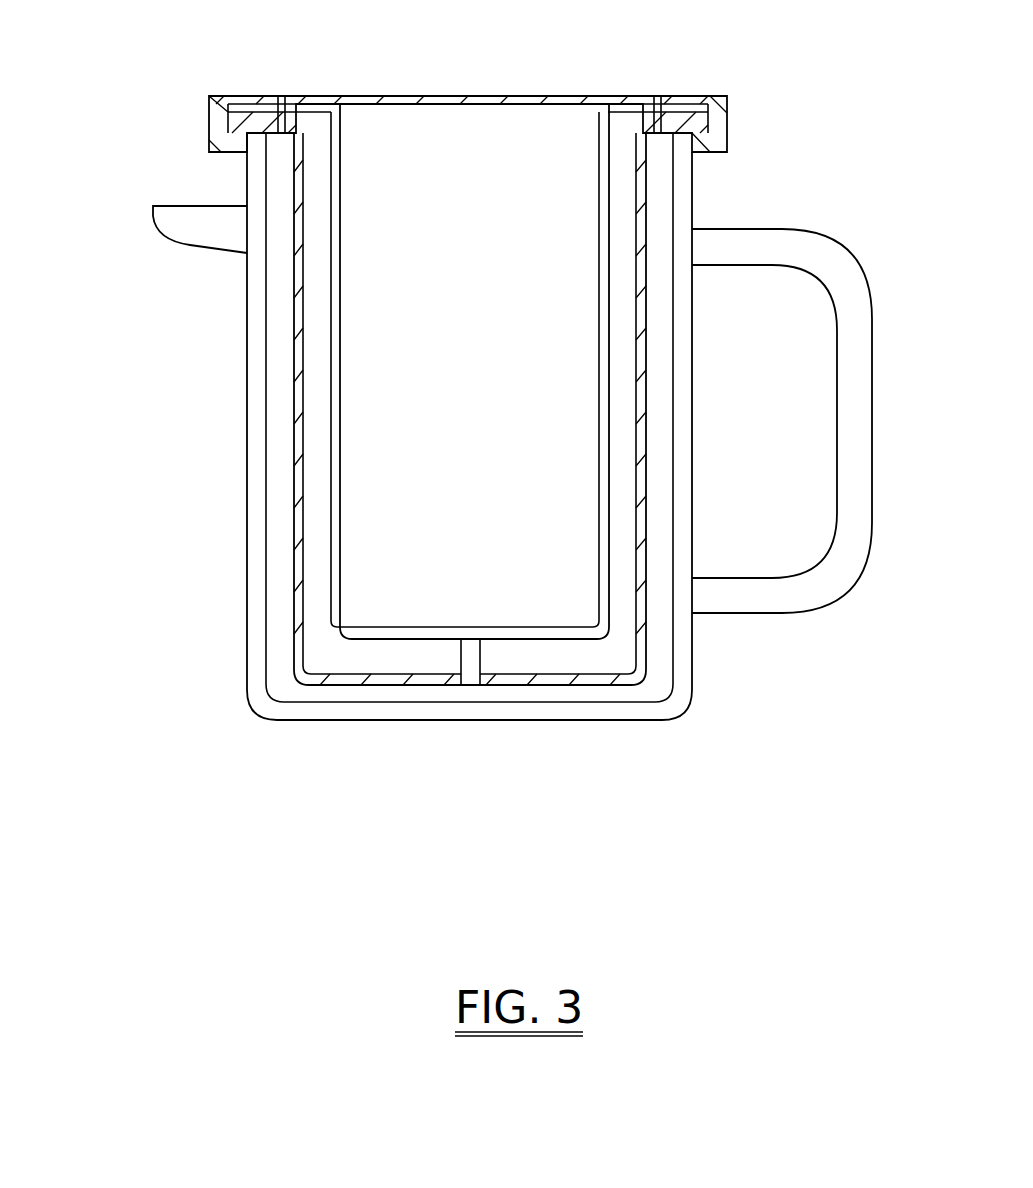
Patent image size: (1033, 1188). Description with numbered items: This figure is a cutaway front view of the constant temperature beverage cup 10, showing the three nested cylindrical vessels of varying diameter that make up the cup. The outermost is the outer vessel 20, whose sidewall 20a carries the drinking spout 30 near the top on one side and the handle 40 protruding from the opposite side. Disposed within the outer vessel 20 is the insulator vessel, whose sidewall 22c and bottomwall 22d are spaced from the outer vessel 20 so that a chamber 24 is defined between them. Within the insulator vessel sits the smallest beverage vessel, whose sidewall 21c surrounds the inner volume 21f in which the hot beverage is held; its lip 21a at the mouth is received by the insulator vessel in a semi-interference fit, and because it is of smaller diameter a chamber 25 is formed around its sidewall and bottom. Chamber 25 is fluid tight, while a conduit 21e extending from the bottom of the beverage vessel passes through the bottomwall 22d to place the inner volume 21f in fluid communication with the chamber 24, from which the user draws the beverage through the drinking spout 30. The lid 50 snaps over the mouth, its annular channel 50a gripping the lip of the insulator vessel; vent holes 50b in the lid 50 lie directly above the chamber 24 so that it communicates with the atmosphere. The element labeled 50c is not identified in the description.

The constant temperature beverage cup 10 is at (265, 895).
The outer vessel 20 is at (247, 313).
The sidewall 20a is at (255, 339).
The lip 21a is at (692, 115).
The sidewall 21c is at (336, 341).
The conduit 21e is at (470, 688).
The inner volume 21f is at (380, 353).
The sidewall 22c is at (297, 487).
The bottomwall 22d is at (385, 678).
The chamber 24 is at (317, 540).
The chamber 25 is at (282, 610).
The drinking spout 30 is at (208, 222).
The handle 40 is at (803, 253).
The lid 50 is at (209, 96).
The annular channel 50a is at (233, 142).
The vent holes 50b is at (658, 97).
The lid plate 50c is at (553, 97).